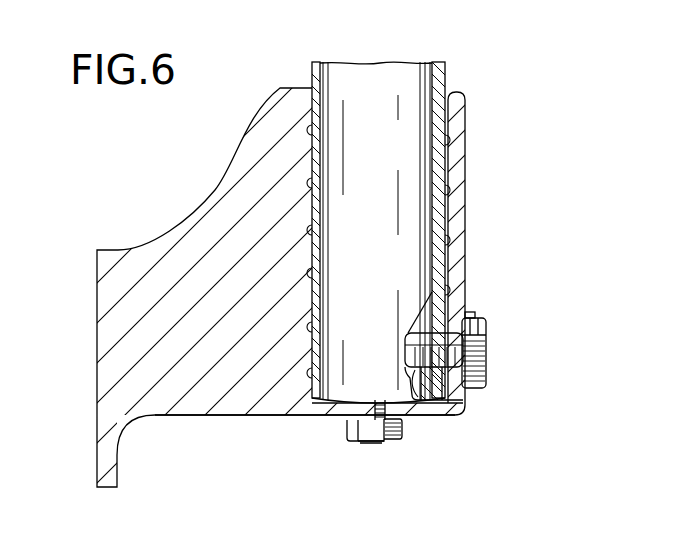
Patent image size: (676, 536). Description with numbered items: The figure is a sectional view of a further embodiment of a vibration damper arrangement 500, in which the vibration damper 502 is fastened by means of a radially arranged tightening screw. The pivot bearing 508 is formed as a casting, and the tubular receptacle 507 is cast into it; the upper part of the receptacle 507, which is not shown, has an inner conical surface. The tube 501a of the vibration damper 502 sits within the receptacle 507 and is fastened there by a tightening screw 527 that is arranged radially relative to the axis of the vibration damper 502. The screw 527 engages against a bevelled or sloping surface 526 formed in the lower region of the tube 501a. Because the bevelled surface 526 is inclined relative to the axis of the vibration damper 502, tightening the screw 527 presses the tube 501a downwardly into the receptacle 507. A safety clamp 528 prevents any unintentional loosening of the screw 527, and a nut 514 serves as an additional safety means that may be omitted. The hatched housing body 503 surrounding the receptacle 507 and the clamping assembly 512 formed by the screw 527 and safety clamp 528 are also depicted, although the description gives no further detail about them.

The vibration damper arrangement 500 is at (206, 148).
The housing body 503 is at (168, 244).
The pivot bearing 508 is at (200, 415).
The vibration damper 502 is at (446, 60).
The tubular receptacle 507 is at (445, 75).
The tube 501a is at (410, 158).
The clamp assembly 512 is at (503, 334).
The safety clamp 528 is at (465, 313).
The tightening screw 527 is at (480, 350).
The bevelled surface 526 is at (424, 404).
The nut 514 is at (348, 430).